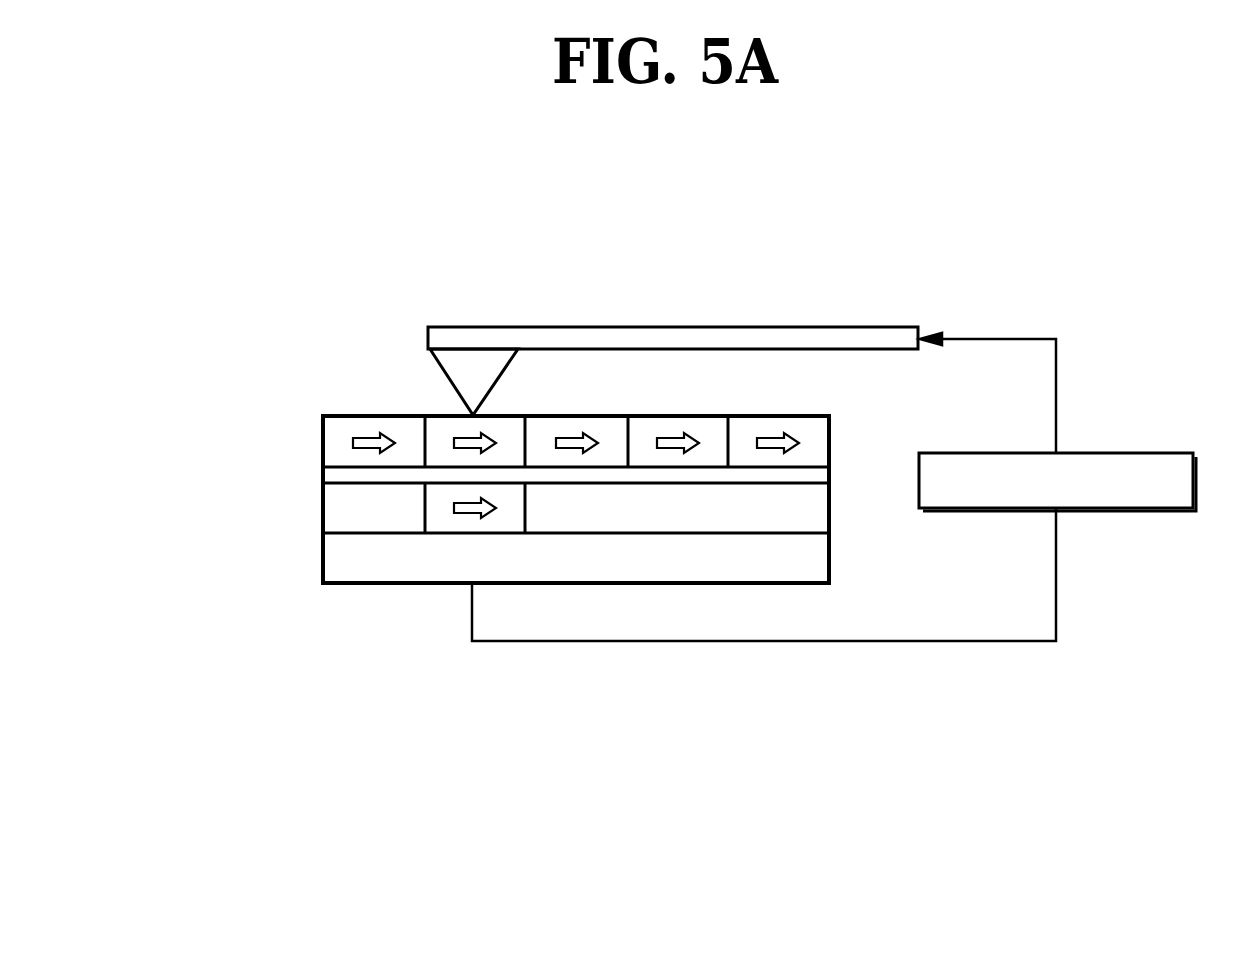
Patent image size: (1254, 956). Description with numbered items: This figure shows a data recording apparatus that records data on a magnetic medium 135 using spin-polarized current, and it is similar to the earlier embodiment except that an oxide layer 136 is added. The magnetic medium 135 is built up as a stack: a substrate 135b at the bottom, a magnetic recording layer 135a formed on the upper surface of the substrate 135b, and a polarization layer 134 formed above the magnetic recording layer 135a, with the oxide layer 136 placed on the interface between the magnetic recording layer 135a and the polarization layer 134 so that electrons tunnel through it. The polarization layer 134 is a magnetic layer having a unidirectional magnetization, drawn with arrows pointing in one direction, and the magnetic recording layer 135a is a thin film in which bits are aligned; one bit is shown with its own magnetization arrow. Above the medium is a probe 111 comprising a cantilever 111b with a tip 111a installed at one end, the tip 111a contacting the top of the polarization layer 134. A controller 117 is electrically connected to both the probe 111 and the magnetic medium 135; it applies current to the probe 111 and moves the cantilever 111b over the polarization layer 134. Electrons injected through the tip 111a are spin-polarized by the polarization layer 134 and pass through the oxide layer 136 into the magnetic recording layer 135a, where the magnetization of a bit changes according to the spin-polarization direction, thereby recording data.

The probe 111 is at (601, 325).
The tip 111a is at (455, 377).
The cantilever 111b is at (545, 340).
The controller 117 is at (1135, 453).
The polarization layer 134 is at (323, 441).
The magnetic medium 135 is at (463, 499).
The magnetic recording layer 135a is at (323, 511).
The substrate 135b is at (323, 560).
The oxide layer 136 is at (323, 475).